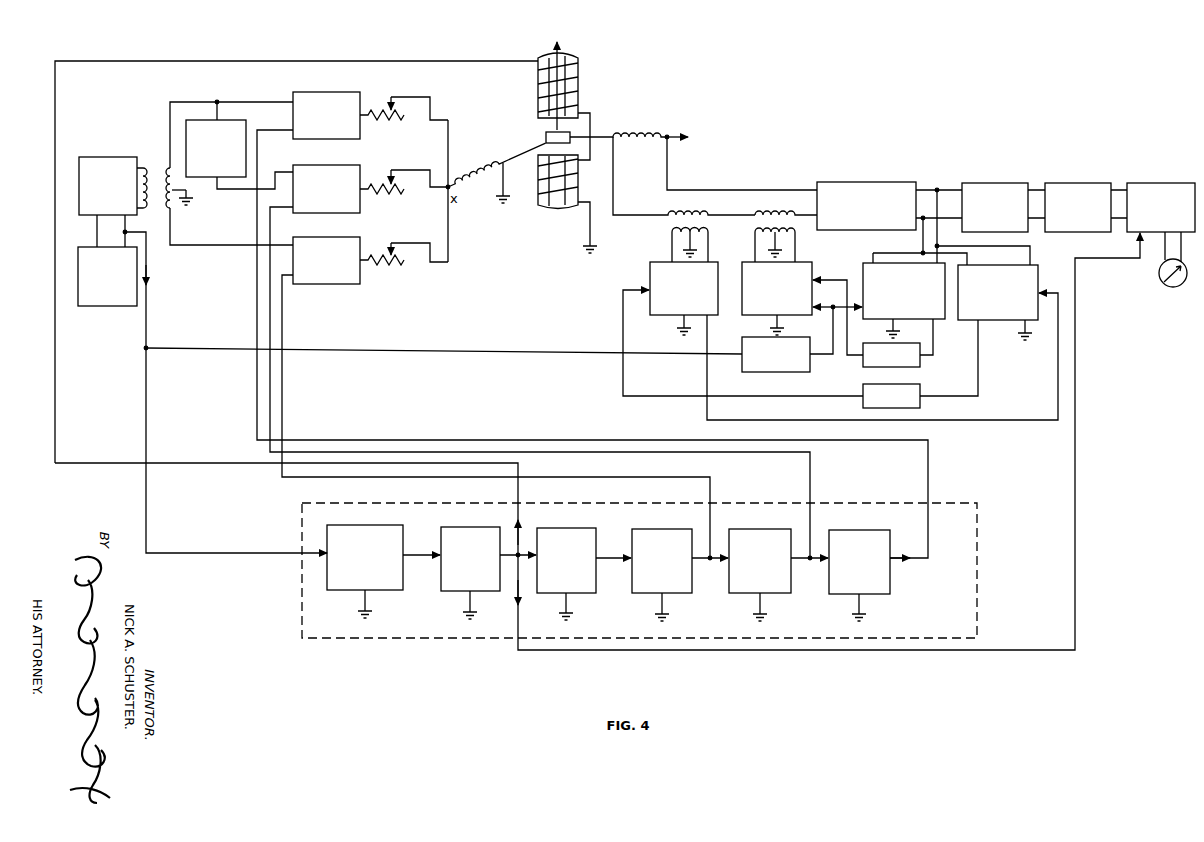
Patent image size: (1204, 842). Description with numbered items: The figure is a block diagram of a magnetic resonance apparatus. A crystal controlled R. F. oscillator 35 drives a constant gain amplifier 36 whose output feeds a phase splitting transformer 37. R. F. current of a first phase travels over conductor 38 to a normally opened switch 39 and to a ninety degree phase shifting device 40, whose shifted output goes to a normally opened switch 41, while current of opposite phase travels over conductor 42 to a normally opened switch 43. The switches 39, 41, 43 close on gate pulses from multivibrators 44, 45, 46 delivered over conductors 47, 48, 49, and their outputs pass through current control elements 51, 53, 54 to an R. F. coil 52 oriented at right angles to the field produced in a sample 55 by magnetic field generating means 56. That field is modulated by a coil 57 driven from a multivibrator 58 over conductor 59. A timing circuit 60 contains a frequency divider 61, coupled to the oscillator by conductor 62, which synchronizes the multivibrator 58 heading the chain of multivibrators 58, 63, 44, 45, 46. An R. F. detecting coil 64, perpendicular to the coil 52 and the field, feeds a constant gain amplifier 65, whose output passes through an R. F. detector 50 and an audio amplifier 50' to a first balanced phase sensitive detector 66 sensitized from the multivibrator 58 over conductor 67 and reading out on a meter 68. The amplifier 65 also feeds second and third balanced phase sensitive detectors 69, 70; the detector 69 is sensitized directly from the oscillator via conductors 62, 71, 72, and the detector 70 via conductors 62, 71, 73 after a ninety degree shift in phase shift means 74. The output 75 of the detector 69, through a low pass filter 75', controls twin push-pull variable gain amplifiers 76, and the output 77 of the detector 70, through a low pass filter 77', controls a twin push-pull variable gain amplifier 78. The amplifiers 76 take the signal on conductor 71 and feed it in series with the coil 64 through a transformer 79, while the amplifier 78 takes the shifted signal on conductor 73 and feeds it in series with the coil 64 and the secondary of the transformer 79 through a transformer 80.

The crystal controlled R. F. oscillator 35 is at (118, 307).
The constant gain amplifier 36 is at (110, 157).
The phase splitting transformer 37 is at (163, 167).
The conductor 38 is at (170, 102).
The normally opened switch 39 is at (345, 92).
The 90° phase shifting device 40 is at (230, 118).
The normally opened switch 41 is at (300, 165).
The conductor 42 is at (248, 246).
The normally opened switch 43 is at (320, 285).
The multivibrator 44 is at (684, 529).
The multivibrator 45 is at (784, 529).
The multivibrator 46 is at (884, 530).
The conductor 47 is at (710, 492).
The conductor 48 is at (810, 492).
The conductor 49 is at (928, 490).
The R. F. detector 50 is at (972, 195).
The audio amplifier 50' is at (1069, 194).
The current control element 51 is at (395, 118).
The R. F. coil 52 is at (495, 168).
The current control element 53 is at (395, 192).
The current control element 54 is at (404, 271).
The sample 55 is at (546, 135).
The magnetic field generating means 56 is at (578, 66).
The coil 57 is at (578, 86).
The multivibrator 58 is at (492, 527).
The conductor 59 is at (55, 378).
The timing circuit 60 is at (977, 560).
The frequency divider 61 is at (386, 525).
The conductor 62 is at (146, 318).
The multivibrator 63 is at (552, 528).
The R. F. detecting coil 64 is at (635, 135).
The constant gain amplifier 65 is at (886, 181).
The first balanced phase sensitive detector 66 is at (1175, 182).
The conductor 67 is at (782, 650).
The meter 68 is at (1160, 278).
The second balanced phase sensitive detector 69 is at (1038, 275).
The third balanced phase sensitive detector 70 is at (863, 275).
The conductor 71 is at (482, 350).
The conductor 72 is at (1058, 375).
The conductor 73 is at (833, 360).
The 90° phase shift means 74 is at (766, 373).
The output 75 is at (963, 358).
The low pass filter 75' is at (793, 358).
The twin push-pull variable gain amplifiers 76 is at (650, 278).
The output 77 is at (943, 340).
The low pass filter 77' is at (883, 334).
The twin push-pull variable gain amplifier 78 is at (812, 268).
The transformer 79 is at (668, 226).
The transformer 80 is at (758, 227).